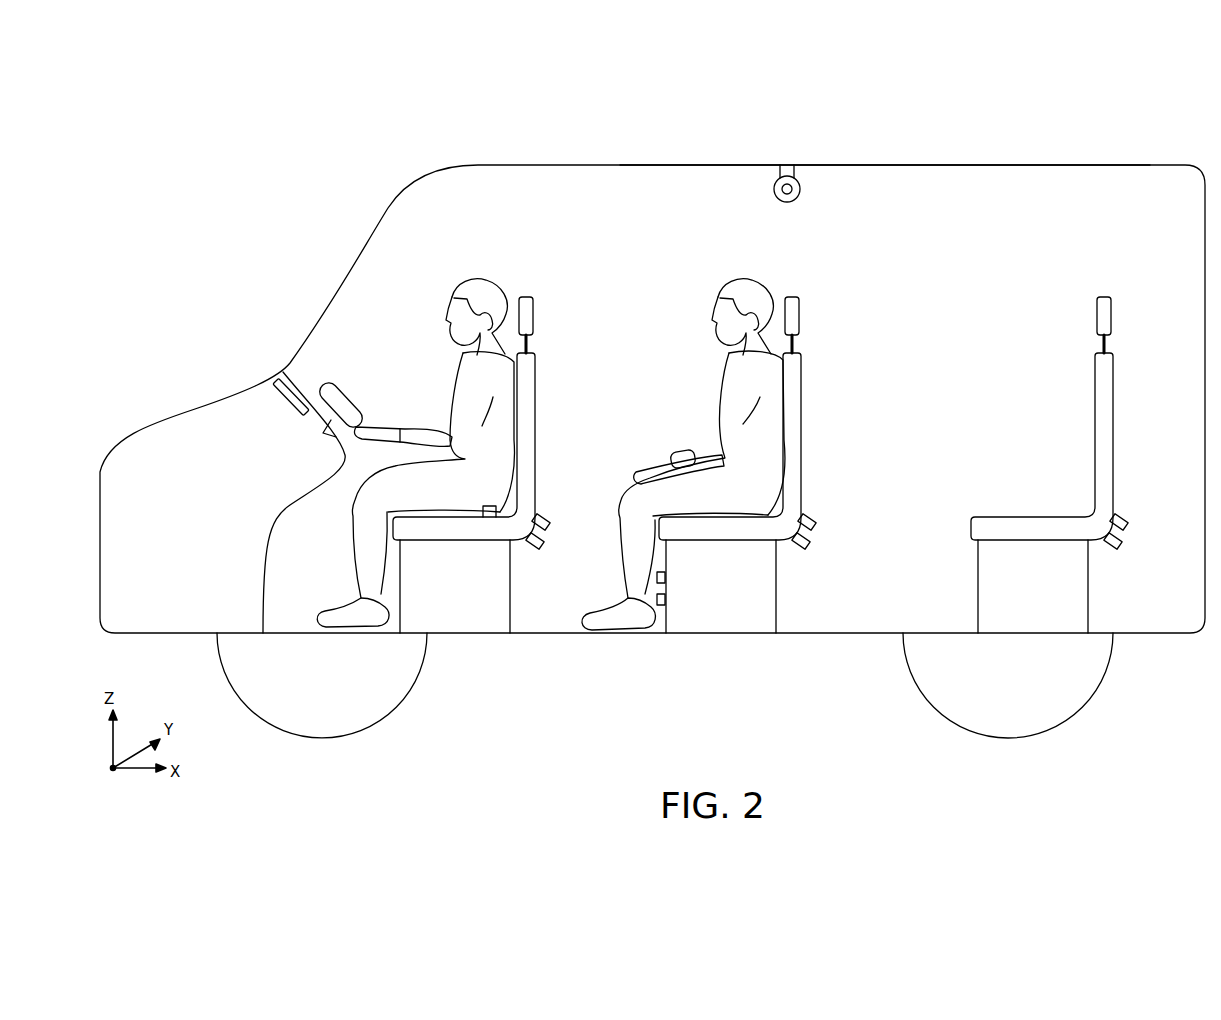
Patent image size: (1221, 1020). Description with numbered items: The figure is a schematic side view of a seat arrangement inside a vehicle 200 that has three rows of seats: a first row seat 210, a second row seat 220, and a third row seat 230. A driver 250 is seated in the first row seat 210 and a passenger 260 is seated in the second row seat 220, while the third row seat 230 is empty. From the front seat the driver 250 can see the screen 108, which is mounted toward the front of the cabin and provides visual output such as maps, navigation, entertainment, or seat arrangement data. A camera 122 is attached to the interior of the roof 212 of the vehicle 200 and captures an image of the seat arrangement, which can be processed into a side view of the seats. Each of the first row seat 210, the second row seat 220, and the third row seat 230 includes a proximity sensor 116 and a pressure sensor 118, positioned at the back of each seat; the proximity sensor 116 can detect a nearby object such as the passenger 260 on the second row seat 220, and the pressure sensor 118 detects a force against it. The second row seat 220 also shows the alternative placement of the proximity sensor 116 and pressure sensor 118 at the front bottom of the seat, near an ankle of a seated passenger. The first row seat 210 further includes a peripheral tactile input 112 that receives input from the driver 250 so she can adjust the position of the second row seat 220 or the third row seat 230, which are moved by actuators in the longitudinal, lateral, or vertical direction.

The vehicle 200 is at (1085, 120).
The roof 212 is at (895, 167).
The camera 122 is at (774, 191).
The screen 108 is at (277, 379).
The driver 250 is at (480, 278).
The passenger 260 is at (742, 279).
The first row seat 210 is at (527, 297).
The second row seat 220 is at (794, 297).
The third row seat 230 is at (1107, 297).
The peripheral tactile input 112 is at (489, 520).
The proximity sensor 116 is at (549, 516).
The pressure sensor 118 is at (540, 550).